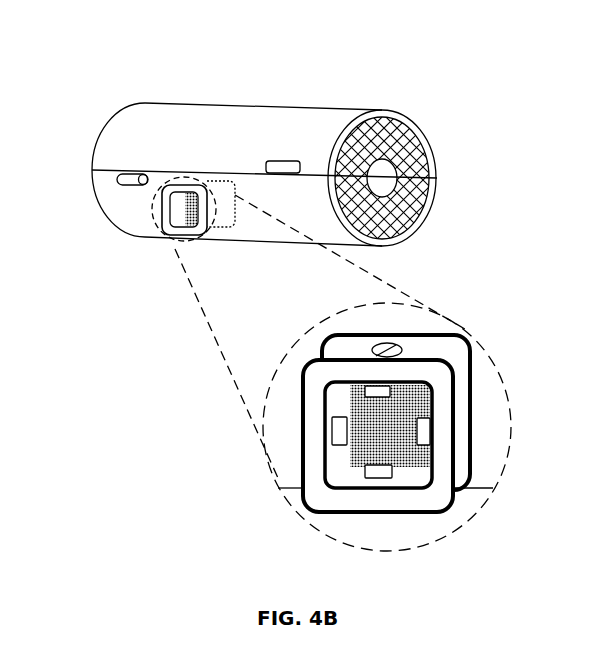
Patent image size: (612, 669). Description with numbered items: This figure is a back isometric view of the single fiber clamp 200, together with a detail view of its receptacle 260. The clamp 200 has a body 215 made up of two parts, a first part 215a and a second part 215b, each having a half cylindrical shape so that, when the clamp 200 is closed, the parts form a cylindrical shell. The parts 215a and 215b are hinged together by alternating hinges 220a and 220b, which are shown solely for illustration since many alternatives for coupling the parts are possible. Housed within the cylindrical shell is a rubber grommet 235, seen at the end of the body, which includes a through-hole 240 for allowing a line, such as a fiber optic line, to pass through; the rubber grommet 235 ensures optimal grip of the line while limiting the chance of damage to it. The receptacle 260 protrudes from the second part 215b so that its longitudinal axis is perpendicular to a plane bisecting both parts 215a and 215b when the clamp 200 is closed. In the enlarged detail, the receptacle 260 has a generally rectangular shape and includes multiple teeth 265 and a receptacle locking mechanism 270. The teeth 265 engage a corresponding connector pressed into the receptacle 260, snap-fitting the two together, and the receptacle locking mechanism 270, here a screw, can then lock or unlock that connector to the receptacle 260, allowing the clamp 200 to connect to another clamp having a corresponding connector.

The single fiber clamp 200 is at (179, 448).
The body 215 is at (350, 97).
The first part 215a is at (331, 106).
The second part 215b is at (343, 247).
The alternating hinge 220a is at (126, 187).
The alternating hinge 220b is at (280, 161).
The rubber grommet 235 is at (402, 206).
The through-hole 240 is at (387, 169).
The receptacle 260 is at (172, 246).
The teeth 265 is at (387, 490).
The receptacle locking mechanism 270 is at (395, 349).